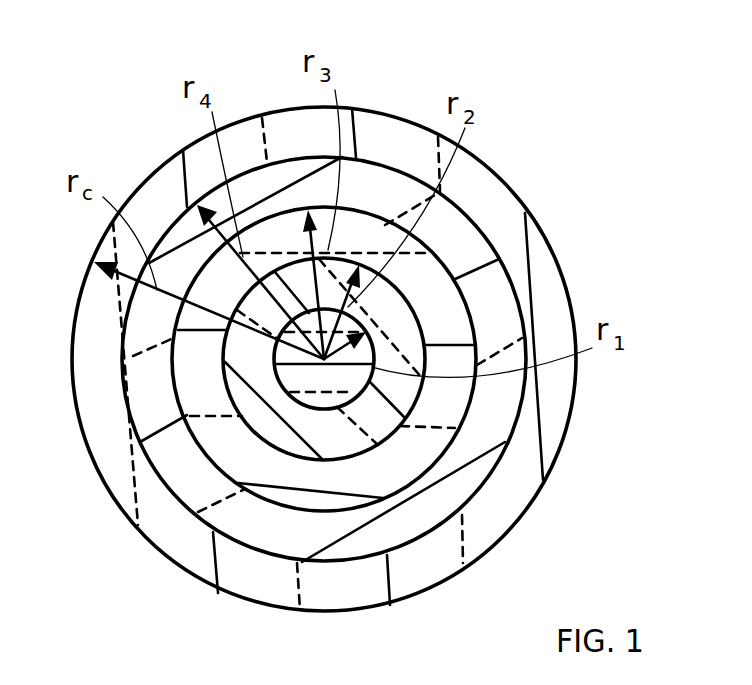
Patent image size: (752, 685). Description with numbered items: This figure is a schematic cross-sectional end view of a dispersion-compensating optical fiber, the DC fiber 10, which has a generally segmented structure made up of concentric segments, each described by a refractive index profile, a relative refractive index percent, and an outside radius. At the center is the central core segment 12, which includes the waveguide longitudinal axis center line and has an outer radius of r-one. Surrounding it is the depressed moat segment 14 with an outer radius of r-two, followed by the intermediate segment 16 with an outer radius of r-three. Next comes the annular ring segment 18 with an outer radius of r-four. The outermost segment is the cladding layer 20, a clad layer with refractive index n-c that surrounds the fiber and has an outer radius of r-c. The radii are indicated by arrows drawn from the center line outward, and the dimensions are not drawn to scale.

The DC fiber 10 is at (603, 60).
The central core segment 12 is at (350, 387).
The depressed moat segment 14 is at (310, 415).
The intermediate segment 16 is at (305, 478).
The annular ring segment 18 is at (358, 537).
The cladding layer 20 is at (455, 543).